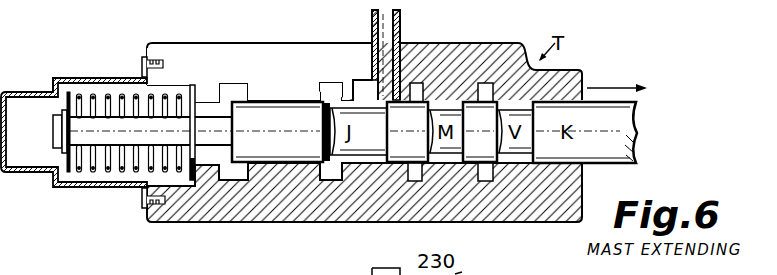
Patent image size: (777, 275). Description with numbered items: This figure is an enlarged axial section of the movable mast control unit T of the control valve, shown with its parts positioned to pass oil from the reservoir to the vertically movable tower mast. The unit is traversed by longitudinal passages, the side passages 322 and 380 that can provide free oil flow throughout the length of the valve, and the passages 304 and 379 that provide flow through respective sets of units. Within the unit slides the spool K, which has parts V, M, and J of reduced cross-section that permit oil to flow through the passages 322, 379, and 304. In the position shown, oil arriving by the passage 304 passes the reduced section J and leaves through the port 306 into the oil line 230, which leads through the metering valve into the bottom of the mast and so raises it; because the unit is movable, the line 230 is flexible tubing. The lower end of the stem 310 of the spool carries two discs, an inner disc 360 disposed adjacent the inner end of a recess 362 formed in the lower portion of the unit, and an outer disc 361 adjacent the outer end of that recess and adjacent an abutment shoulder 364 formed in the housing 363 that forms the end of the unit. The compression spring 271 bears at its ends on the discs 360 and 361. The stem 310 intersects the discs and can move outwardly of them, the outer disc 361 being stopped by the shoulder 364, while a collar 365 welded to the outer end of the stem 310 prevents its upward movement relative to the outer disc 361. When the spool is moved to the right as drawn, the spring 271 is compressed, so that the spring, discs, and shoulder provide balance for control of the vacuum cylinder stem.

The oil line 230 is at (400, 31).
The compression spring 271 is at (102, 173).
The passage 304 is at (333, 178).
The port 306 is at (383, 95).
The stem 310 is at (218, 162).
The passage 322 is at (487, 88).
The disc 360 is at (190, 162).
The disc 361 is at (68, 174).
The recess 362 is at (175, 83).
The housing 363 is at (62, 80).
The abutment shoulder 364 is at (57, 85).
The collar 365 is at (57, 145).
The passage 379 is at (417, 172).
The passage 380 is at (233, 178).